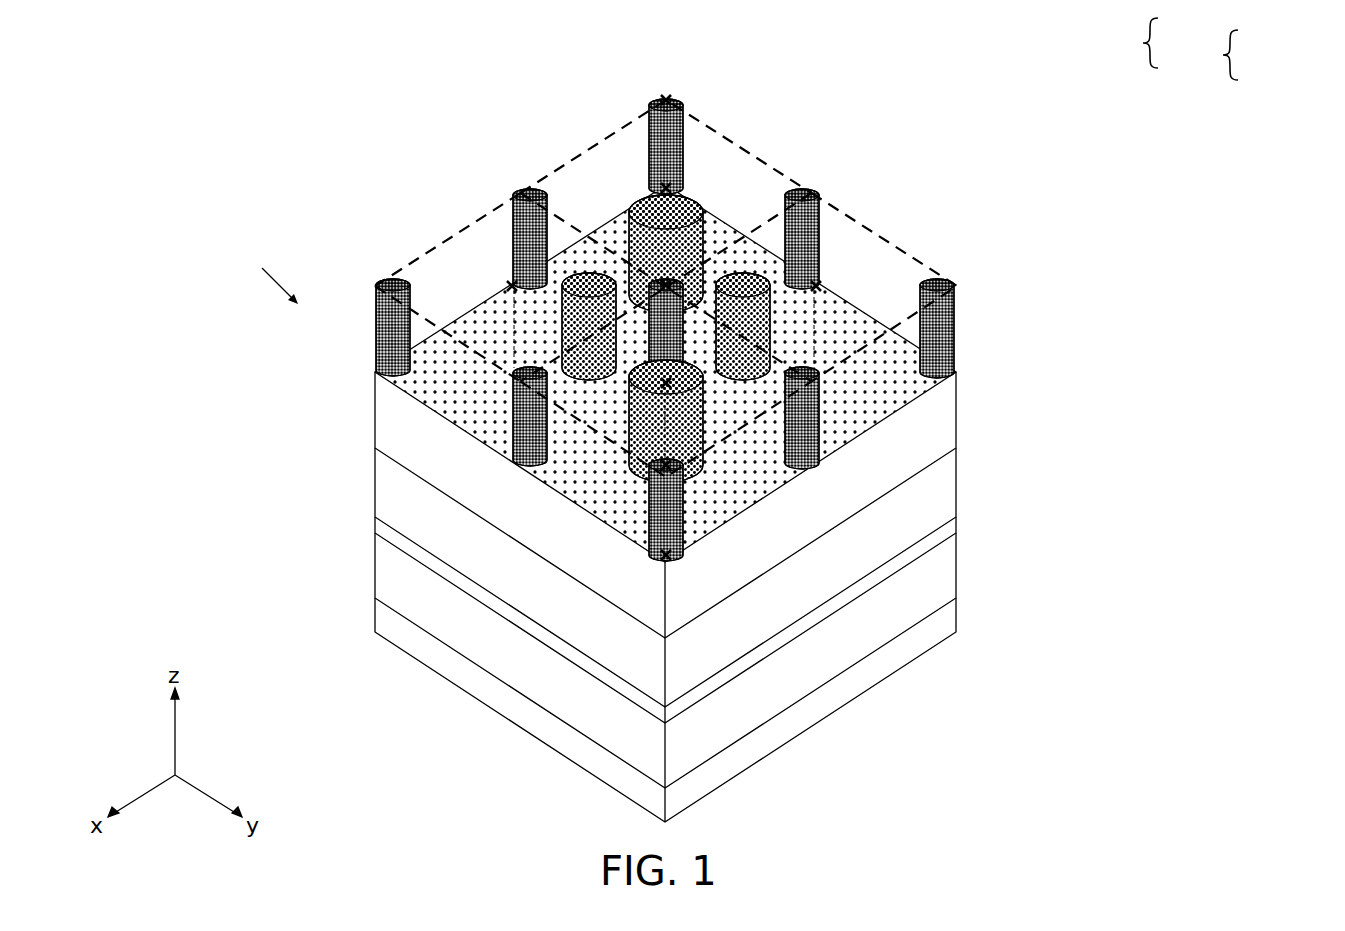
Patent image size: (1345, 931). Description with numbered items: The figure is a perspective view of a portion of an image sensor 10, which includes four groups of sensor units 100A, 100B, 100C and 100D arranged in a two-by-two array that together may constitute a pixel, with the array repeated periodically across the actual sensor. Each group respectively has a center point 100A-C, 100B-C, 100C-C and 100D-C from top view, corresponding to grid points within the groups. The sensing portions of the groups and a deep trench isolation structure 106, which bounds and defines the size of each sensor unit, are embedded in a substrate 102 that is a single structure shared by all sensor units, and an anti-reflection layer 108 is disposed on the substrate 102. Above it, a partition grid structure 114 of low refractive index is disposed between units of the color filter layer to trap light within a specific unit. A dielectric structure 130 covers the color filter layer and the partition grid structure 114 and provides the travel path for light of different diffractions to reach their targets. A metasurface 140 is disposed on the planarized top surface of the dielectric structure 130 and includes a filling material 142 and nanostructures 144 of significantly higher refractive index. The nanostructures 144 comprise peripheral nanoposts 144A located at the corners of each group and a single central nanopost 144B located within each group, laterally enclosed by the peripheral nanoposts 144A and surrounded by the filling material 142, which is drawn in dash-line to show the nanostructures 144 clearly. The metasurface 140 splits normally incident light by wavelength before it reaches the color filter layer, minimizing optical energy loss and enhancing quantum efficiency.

The image sensor 10 is at (268, 270).
The group of sensor units 100A is at (462, 351).
The center point 100A-C is at (509, 287).
The group of sensor units 100B is at (760, 152).
The center point 100B-C is at (664, 184).
The group of sensor units 100C is at (604, 445).
The center point 100C-C is at (648, 388).
The group of sensor units 100D is at (902, 245).
The center point 100D-C is at (818, 286).
The substrate 102 is at (940, 625).
The deep trench isolation structure 106 is at (940, 575).
The anti-reflection layer 108 is at (940, 539).
The partition grid structure 114 is at (940, 494).
The dielectric structure 130 is at (942, 417).
The metasurface 140 is at (1201, 49).
The filling material 142 is at (873, 407).
The nanostructures 144 is at (1237, 56).
The peripheral nanoposts 144A is at (650, 205).
The central nanopost 144B is at (593, 280).